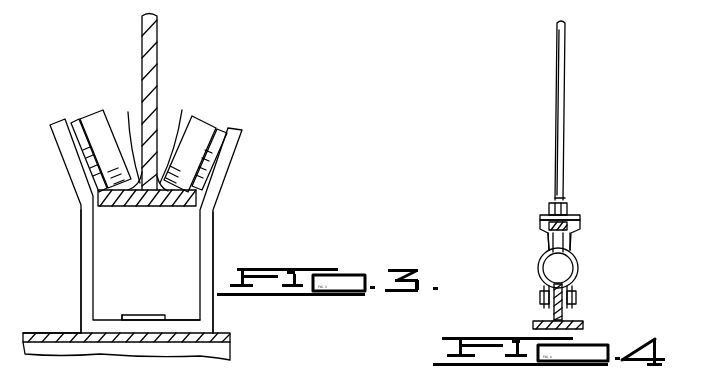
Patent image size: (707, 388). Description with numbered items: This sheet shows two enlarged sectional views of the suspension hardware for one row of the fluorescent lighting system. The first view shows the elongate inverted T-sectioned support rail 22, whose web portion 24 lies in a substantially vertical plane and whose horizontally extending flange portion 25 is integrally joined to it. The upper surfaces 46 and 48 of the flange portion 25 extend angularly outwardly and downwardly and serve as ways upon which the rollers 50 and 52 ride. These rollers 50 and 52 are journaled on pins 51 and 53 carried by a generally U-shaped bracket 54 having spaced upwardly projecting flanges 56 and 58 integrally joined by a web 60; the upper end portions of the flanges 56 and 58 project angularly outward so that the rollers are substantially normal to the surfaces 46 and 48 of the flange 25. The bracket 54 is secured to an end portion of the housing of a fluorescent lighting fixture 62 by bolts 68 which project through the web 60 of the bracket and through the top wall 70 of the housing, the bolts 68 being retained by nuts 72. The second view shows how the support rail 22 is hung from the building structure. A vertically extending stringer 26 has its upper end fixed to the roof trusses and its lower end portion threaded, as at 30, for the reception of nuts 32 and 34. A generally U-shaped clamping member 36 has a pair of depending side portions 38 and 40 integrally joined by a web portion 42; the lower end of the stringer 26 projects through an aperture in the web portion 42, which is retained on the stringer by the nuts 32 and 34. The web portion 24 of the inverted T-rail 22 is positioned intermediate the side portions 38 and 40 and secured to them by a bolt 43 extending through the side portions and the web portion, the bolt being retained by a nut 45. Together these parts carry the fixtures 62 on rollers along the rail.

In FIG. 3, the support rail 22 is at (161, 43).
In FIG. 4, the support rail 22 is at (579, 317).
In FIG. 3, the web portion 24 is at (152, 72).
In FIG. 4, the web portion 24 is at (570, 286).
In FIG. 3, the flange portion 25 is at (188, 197).
In FIG. 4, the stringer 26 is at (562, 155).
In FIG. 4, the threaded lower end portion 30 is at (568, 200).
In FIG. 4, the nut 32 is at (580, 212).
In FIG. 4, the nut 34 is at (575, 227).
In FIG. 4, the clamping member 36 is at (579, 269).
In FIG. 4, the side portion 38 is at (547, 248).
In FIG. 4, the side portion 40 is at (571, 242).
In FIG. 4, the web portion 42 is at (545, 221).
In FIG. 4, the bolt 43 is at (574, 300).
In FIG. 4, the nut 45 is at (545, 305).
In FIG. 3, the upper surface 46 is at (124, 138).
In FIG. 3, the upper surface 48 is at (176, 138).
In FIG. 3, the roller 50 is at (90, 117).
In FIG. 3, the pin 51 is at (80, 150).
In FIG. 3, the roller 52 is at (200, 130).
In FIG. 3, the pin 53 is at (212, 152).
In FIG. 3, the bracket 54 is at (212, 252).
In FIG. 3, the flange 56 is at (214, 216).
In FIG. 3, the flange 58 is at (80, 252).
In FIG. 3, the web 60 is at (182, 320).
In FIG. 3, the fluorescent lighting fixture 62 is at (230, 338).
In FIG. 3, the bolt 68 is at (125, 312).
In FIG. 3, the top wall 70 is at (90, 334).
In FIG. 3, the nut 72 is at (144, 315).